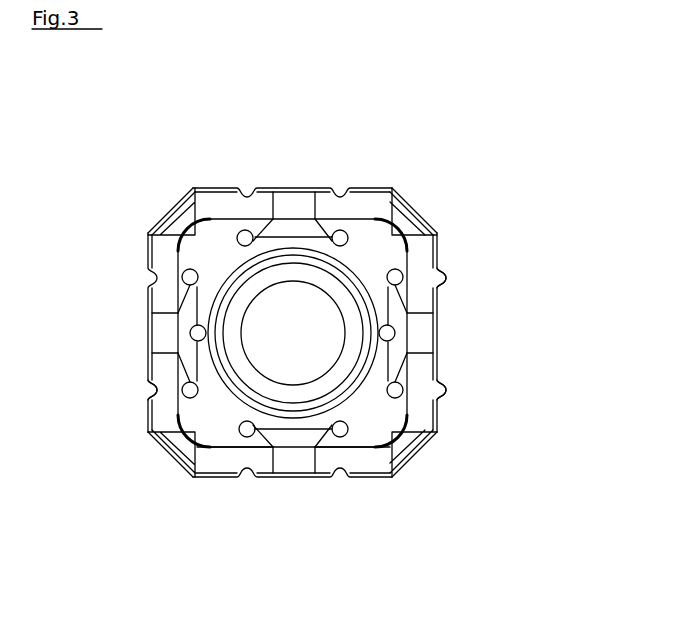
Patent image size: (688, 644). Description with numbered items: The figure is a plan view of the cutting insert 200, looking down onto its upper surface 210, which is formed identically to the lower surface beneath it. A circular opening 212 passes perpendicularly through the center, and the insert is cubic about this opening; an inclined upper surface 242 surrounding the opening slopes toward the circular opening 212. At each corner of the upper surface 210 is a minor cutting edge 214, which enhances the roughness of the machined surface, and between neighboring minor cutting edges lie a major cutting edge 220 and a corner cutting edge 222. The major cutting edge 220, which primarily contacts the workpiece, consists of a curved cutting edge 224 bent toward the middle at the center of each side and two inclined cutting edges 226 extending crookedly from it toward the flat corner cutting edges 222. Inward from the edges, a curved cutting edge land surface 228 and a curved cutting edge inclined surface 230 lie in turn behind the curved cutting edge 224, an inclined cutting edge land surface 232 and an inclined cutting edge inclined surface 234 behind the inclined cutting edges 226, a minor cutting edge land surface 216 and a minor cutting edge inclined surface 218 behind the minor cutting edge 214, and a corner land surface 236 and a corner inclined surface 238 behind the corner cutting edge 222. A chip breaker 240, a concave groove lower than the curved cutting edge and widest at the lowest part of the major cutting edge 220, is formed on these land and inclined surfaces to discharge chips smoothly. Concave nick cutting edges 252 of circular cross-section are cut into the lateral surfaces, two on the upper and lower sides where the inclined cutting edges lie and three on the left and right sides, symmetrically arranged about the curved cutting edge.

The cutting insert 200 is at (366, 150).
The upper surface 210 is at (185, 448).
The circular opening 212 is at (268, 322).
The minor cutting edge 214 is at (400, 191).
The minor cutting edge land surface 216 is at (420, 203).
The minor cutting edge inclined surface 218 is at (422, 219).
The major cutting edge 220 is at (563, 255).
The corner cutting edge 222 is at (147, 230).
The curved cutting edge 224 is at (437, 312).
The inclined cutting edge 226 is at (437, 250).
The curved cutting edge land surface 228 is at (280, 478).
The curved cutting edge inclined surface 230 is at (305, 465).
The inclined cutting edge land surface 232 is at (362, 478).
The inclined cutting edge inclined surface 234 is at (368, 463).
The corner land surface 236 is at (187, 190).
The corner inclined surface 238 is at (192, 197).
The chip breaker 240 is at (177, 332).
The inclined upper surface 242 is at (235, 275).
The concave nick cutting edge 252 is at (150, 390).